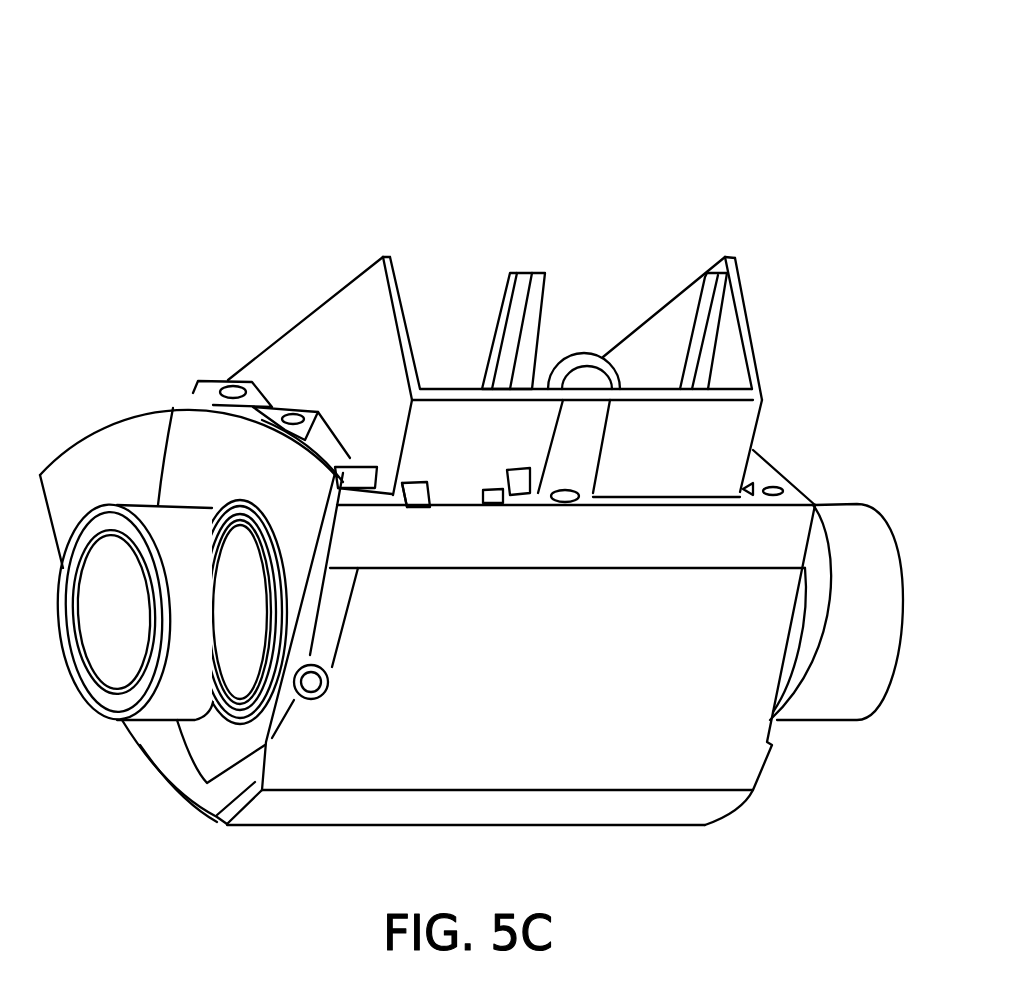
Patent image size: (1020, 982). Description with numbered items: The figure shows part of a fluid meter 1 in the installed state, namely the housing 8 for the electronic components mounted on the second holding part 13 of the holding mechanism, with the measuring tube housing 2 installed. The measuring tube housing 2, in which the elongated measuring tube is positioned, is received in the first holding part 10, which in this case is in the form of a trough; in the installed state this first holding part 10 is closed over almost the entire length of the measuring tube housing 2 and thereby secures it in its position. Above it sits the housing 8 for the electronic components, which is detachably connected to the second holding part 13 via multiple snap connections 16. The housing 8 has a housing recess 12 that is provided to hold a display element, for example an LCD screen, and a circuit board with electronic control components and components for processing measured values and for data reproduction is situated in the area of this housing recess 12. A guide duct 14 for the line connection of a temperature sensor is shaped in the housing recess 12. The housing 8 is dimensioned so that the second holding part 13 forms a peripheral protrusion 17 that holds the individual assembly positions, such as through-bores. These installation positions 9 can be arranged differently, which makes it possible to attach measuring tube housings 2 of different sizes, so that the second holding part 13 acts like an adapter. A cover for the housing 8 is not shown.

The fluid meter 1 is at (532, 51).
The measuring tube housing 2 is at (183, 700).
The housing 8 is at (325, 322).
The installation positions 9 is at (784, 478).
The first holding part 10 is at (524, 717).
The housing recess 12 is at (661, 371).
The second holding part 13 is at (766, 470).
The guide duct 14 is at (527, 273).
The snap connections 16 is at (419, 509).
The peripheral protrusion 17 is at (755, 452).